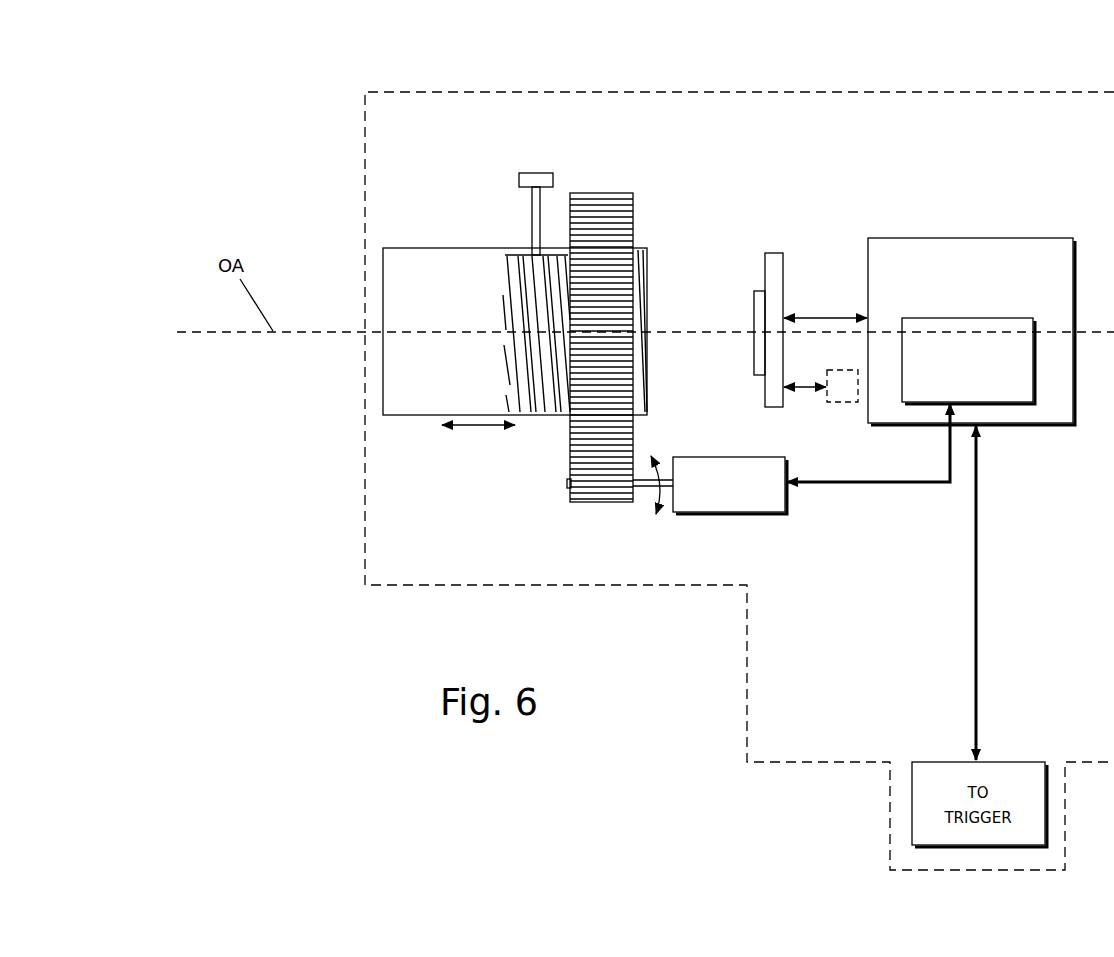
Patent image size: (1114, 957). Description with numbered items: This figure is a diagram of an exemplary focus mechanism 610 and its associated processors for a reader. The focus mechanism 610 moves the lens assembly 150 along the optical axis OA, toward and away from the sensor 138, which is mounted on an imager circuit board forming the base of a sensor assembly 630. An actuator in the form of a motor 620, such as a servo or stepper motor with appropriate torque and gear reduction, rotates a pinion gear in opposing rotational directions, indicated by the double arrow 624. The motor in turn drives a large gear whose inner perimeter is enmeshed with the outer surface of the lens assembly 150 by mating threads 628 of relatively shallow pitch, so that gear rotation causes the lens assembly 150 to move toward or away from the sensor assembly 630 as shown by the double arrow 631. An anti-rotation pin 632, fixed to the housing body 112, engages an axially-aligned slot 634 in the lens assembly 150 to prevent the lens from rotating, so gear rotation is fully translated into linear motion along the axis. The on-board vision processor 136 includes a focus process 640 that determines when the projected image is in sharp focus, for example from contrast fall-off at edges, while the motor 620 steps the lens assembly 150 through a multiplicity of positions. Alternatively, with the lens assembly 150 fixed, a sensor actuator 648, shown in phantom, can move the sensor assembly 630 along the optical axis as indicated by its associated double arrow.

The housing body 112 is at (846, 116).
The lens assembly 150 is at (441, 247).
The anti-rotation pin 632 is at (532, 213).
The axially-aligned slot 634 is at (505, 250).
The mating threads 628 is at (508, 321).
The double arrow 631 is at (486, 427).
The focus mechanism 610 is at (553, 462).
The double arrow 624 is at (655, 500).
The motor 620 is at (730, 514).
The sensor 138 is at (761, 294).
The sensor assembly 630 is at (773, 273).
The vision processor 136 is at (997, 238).
The focus process 640 is at (993, 318).
The sensor actuator 648 is at (838, 403).